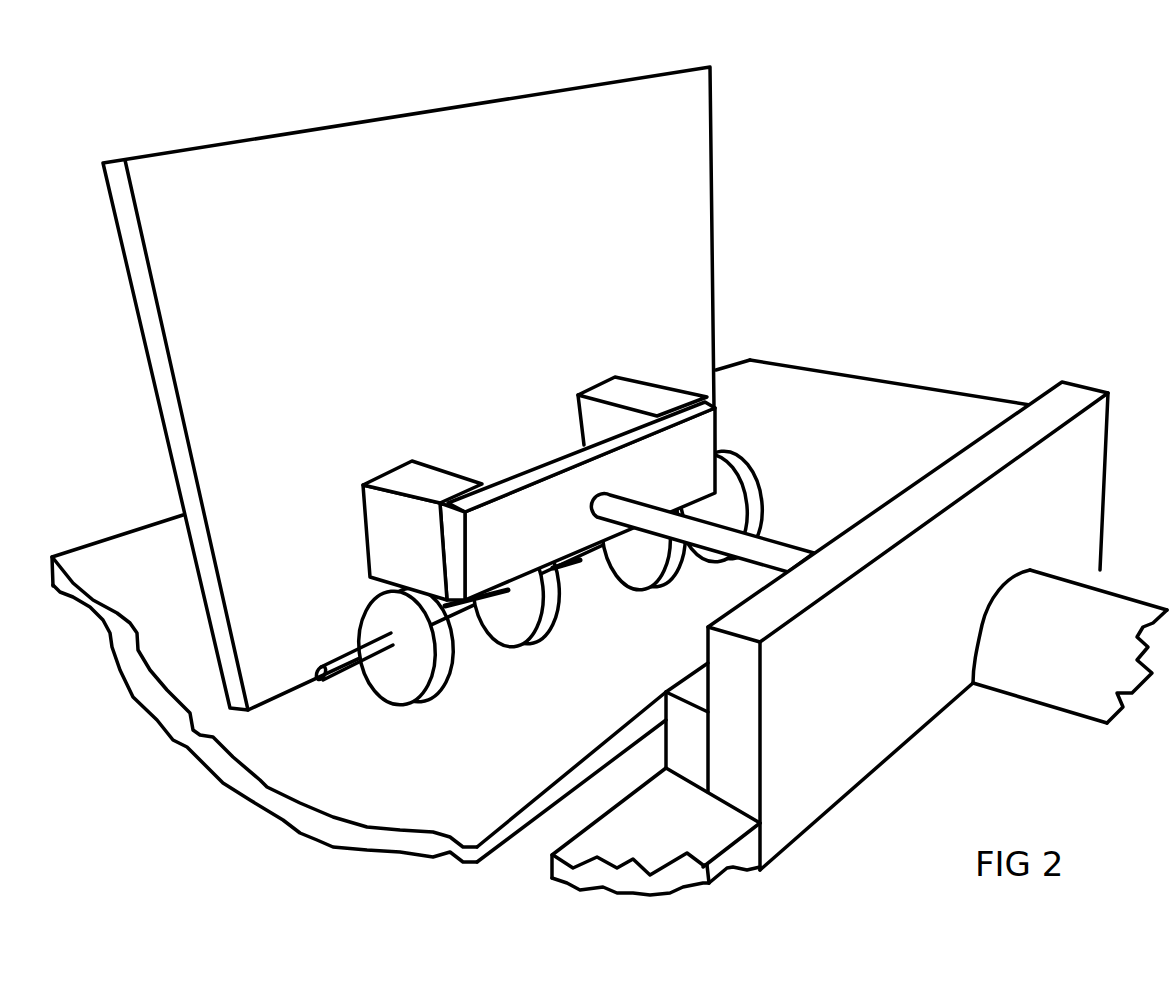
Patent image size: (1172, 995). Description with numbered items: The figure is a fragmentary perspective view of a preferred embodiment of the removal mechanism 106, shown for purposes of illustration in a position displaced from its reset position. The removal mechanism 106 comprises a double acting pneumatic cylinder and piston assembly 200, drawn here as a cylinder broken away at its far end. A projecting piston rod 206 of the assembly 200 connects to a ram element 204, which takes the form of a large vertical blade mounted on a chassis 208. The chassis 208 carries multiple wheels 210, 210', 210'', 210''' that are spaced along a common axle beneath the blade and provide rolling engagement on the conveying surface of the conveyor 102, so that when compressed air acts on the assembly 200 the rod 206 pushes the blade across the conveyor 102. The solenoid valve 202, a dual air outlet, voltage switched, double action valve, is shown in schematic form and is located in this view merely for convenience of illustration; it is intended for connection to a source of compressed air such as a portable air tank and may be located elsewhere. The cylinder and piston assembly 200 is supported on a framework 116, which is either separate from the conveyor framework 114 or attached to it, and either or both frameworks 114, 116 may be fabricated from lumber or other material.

The conveyor 102 is at (421, 794).
The removal mechanism 106 is at (409, 373).
The conveyor framework 114 is at (696, 847).
The framework 116 is at (891, 682).
The double acting pneumatic cylinder and piston assembly 200 is at (1060, 690).
The solenoid valve 202 is at (703, 695).
The ram element 204 is at (492, 319).
The piston rod 206 is at (772, 540).
The chassis 208 is at (552, 553).
The wheel 210 is at (432, 668).
The wheel 210' is at (541, 616).
The wheel 210'' is at (643, 562).
The wheel 210''' is at (766, 506).